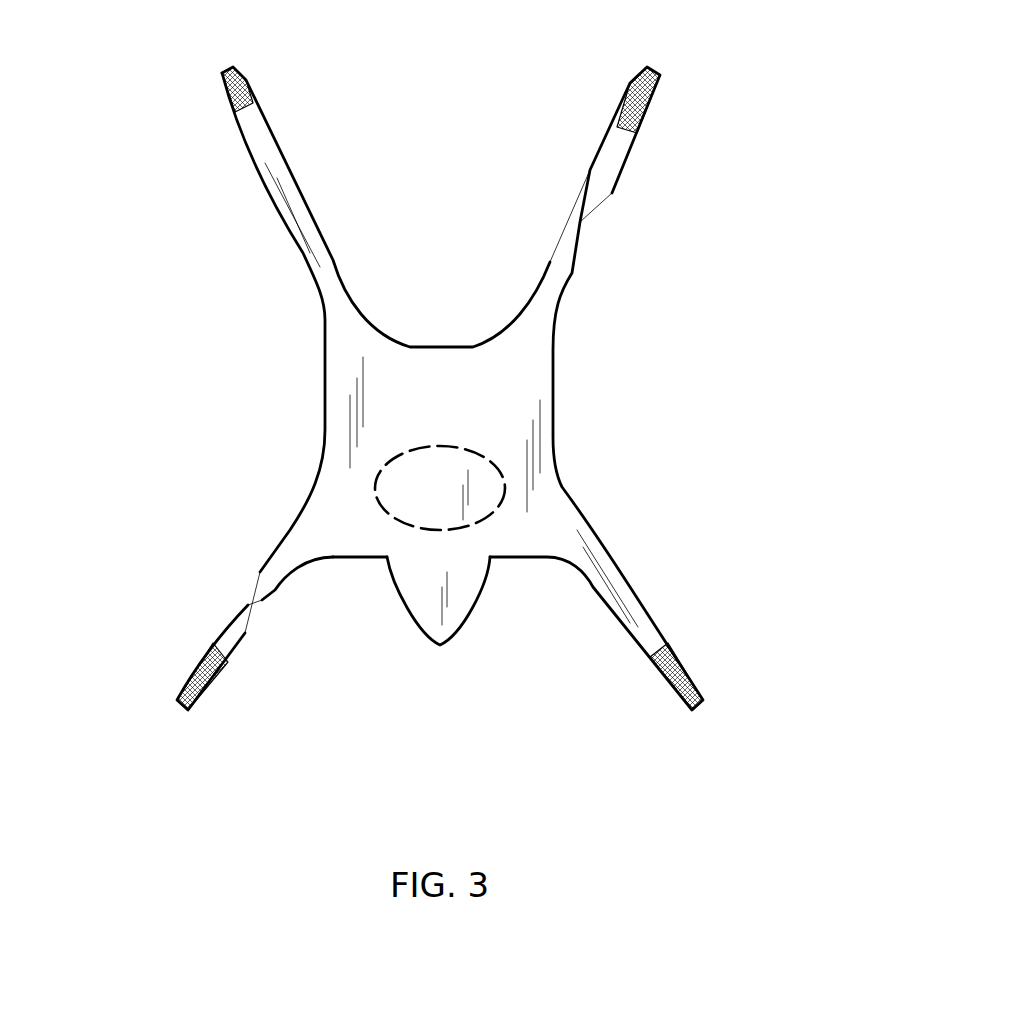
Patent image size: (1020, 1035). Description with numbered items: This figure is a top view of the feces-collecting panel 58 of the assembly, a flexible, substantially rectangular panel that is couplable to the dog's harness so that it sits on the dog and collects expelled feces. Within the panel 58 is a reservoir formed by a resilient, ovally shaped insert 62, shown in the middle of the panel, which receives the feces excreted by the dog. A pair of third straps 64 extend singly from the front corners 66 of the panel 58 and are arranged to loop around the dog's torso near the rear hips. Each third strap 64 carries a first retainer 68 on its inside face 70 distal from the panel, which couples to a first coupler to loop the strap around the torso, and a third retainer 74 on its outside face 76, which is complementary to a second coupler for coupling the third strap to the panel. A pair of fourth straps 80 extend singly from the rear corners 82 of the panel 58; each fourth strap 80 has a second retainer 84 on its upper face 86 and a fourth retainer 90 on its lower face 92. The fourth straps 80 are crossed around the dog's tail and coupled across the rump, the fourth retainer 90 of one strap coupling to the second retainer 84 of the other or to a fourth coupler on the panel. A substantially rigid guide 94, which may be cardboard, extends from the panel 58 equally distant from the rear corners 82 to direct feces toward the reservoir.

The panel 58 is at (521, 400).
The insert 62 is at (494, 468).
The third straps 64 is at (546, 253).
The front corners 66 is at (516, 357).
The first retainers 68 is at (251, 83).
The inside face 70 is at (285, 227).
The third retainers 74 is at (658, 102).
The outside face 76 is at (618, 157).
The fourth straps 80 is at (627, 636).
The rear corners 82 is at (558, 530).
The second retainers 84 is at (691, 672).
The upper face 86 is at (276, 554).
The fourth retainers 90 is at (192, 673).
The lower face 92 is at (223, 630).
The guide 94 is at (461, 610).